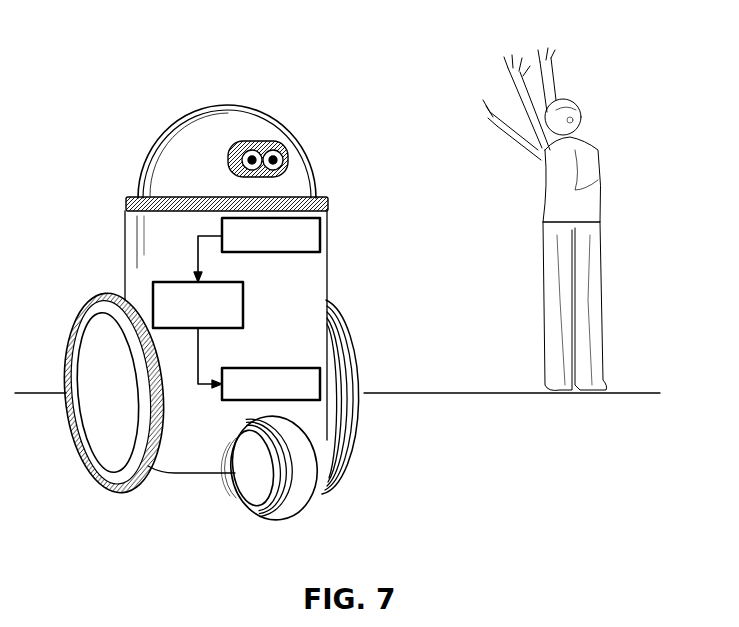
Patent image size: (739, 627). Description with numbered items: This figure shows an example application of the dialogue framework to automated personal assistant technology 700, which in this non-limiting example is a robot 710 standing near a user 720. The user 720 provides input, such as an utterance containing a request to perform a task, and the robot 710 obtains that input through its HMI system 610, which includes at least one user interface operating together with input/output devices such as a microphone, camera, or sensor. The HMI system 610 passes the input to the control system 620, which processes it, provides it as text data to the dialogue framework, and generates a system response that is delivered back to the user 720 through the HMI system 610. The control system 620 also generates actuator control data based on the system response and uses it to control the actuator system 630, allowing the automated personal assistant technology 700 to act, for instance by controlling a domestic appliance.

The automated personal assistant technology 700 is at (374, 74).
The robot 710 is at (181, 119).
The user 720 is at (600, 185).
The HMI system 610 is at (296, 266).
The control system 620 is at (260, 313).
The actuator system 630 is at (285, 362).